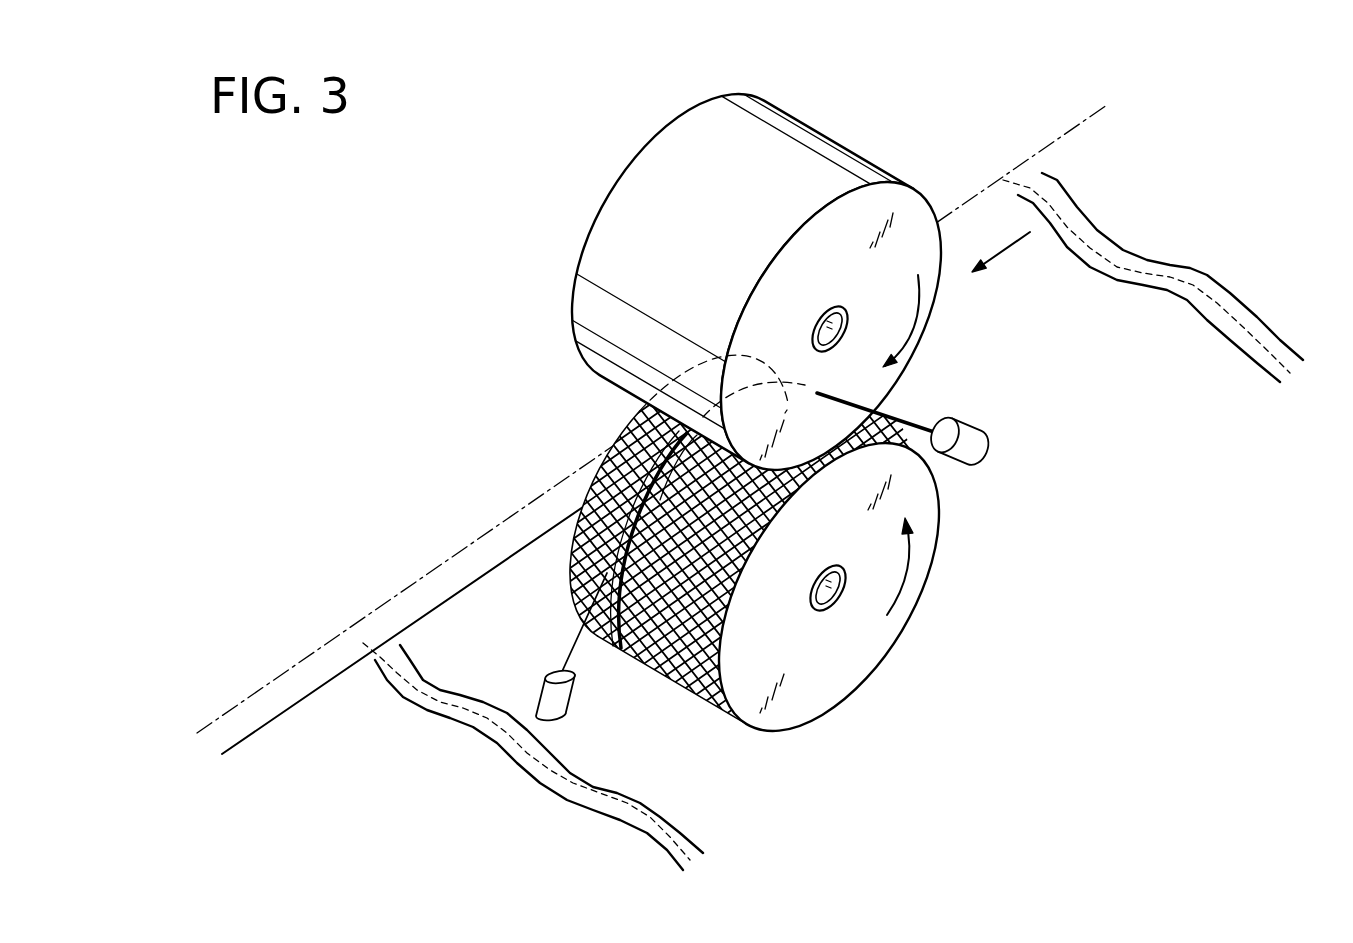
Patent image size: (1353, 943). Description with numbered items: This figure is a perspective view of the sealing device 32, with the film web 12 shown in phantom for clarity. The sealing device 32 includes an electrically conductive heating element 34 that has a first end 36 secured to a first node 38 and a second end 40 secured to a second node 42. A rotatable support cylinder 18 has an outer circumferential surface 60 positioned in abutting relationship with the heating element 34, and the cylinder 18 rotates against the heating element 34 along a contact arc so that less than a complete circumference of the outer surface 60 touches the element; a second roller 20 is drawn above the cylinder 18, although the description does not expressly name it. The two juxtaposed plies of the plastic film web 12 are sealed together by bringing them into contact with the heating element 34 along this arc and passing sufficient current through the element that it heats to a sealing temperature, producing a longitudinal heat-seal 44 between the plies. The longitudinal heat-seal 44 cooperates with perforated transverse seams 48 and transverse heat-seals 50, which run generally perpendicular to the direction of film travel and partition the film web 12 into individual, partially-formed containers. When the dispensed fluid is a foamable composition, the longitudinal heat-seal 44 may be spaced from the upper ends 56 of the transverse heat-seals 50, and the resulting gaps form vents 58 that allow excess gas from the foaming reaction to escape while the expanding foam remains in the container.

The film web 12 is at (1080, 143).
The rotatable support cylinder 18 is at (850, 655).
The upper roller 20 is at (905, 200).
The sealing device 32 is at (741, 501).
The heating element 34 is at (903, 412).
The first end 36 is at (560, 672).
The first node 38 is at (567, 710).
The second end 40 is at (932, 427).
The second node 42 is at (980, 448).
The longitudinal heat-seal 44 is at (530, 537).
The perforated transverse seams 48 is at (1215, 297).
The transverse heat-seals 50 is at (1237, 340).
The upper ends 56 is at (412, 645).
The vents 58 is at (367, 665).
The outer circumferential surface 60 is at (681, 693).